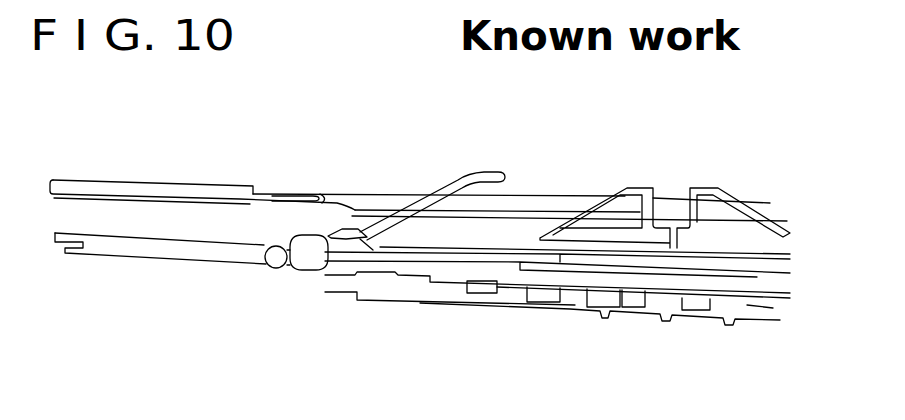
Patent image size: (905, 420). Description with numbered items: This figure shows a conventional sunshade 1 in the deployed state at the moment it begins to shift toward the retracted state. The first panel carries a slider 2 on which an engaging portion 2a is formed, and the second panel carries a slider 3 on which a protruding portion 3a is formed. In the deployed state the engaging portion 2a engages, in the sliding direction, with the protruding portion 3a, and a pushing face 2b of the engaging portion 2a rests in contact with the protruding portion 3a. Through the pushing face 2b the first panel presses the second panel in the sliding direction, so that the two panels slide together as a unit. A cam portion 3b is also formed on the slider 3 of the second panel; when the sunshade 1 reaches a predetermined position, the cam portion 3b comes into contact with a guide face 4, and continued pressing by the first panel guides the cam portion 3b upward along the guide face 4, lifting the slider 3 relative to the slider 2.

The sunshade 1 is at (168, 218).
The slider 2 is at (146, 247).
The engaging portion 2a is at (270, 281).
The pushing face 2b is at (268, 244).
The slider 3 is at (430, 267).
The protruding portion 3a is at (281, 271).
The cam portion 3b is at (340, 229).
The guide face 4 is at (407, 206).